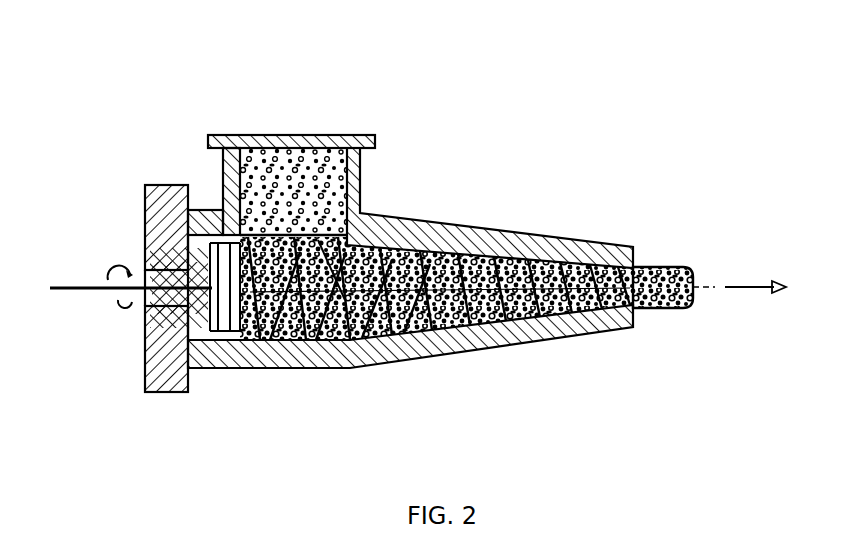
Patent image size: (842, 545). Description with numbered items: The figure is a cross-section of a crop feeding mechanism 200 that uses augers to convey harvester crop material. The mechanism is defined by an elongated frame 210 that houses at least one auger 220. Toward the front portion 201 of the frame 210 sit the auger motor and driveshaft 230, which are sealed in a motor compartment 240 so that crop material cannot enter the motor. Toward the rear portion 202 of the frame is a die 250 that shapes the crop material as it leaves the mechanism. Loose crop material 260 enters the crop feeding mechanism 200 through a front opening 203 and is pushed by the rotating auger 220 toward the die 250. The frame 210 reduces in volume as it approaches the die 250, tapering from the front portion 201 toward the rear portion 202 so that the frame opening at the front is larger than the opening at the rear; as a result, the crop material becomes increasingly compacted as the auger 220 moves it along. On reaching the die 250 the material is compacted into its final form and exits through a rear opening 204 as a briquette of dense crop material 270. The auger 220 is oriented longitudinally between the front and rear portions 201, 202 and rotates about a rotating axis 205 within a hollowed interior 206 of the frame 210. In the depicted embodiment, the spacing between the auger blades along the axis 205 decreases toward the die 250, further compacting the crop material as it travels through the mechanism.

The crop feeding mechanism 200 is at (562, 199).
The front portion 201 is at (110, 362).
The rear portion 202 is at (683, 238).
The front opening 203 is at (338, 122).
The rear opening 204 is at (637, 260).
The rotating axis 205 is at (278, 312).
The hollowed interior 206 is at (333, 238).
The elongated frame 210 is at (465, 228).
The auger 220 is at (318, 235).
The auger motor and driveshaft 230 is at (112, 288).
The motor compartment 240 is at (125, 288).
The die 250 is at (587, 303).
The loose crop material 260 is at (293, 190).
The briquette of dense crop material 270 is at (690, 307).